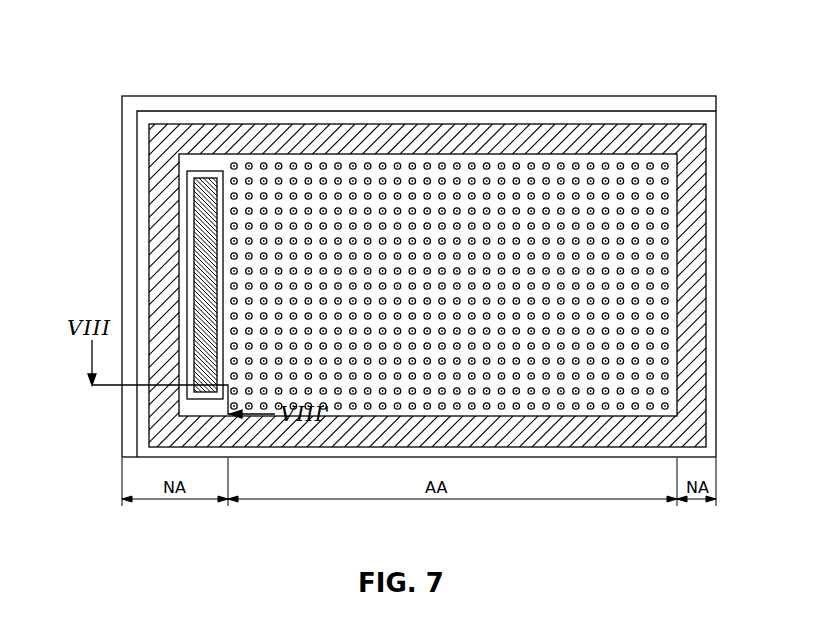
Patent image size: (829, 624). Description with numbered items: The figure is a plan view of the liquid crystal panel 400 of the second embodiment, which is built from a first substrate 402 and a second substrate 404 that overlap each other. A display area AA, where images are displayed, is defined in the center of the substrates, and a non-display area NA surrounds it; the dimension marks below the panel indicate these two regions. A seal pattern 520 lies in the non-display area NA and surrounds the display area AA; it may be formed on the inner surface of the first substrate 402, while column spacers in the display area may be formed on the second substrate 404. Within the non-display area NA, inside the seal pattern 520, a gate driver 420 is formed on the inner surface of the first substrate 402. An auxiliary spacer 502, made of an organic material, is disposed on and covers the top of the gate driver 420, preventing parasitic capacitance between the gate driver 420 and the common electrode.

The liquid crystal panel 400 is at (419, 230).
The first substrate 402 is at (592, 103).
The second substrate 404 is at (620, 118).
The gate driver 420 is at (213, 280).
The auxiliary spacer 502 is at (197, 183).
The seal pattern 520 is at (592, 440).